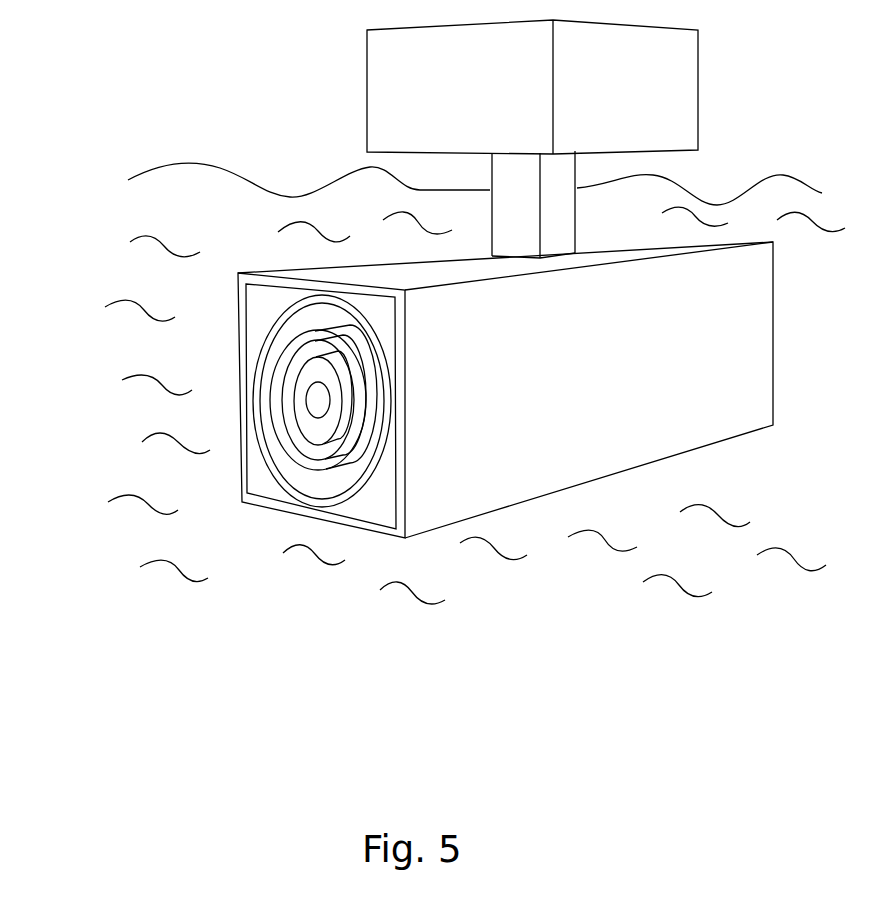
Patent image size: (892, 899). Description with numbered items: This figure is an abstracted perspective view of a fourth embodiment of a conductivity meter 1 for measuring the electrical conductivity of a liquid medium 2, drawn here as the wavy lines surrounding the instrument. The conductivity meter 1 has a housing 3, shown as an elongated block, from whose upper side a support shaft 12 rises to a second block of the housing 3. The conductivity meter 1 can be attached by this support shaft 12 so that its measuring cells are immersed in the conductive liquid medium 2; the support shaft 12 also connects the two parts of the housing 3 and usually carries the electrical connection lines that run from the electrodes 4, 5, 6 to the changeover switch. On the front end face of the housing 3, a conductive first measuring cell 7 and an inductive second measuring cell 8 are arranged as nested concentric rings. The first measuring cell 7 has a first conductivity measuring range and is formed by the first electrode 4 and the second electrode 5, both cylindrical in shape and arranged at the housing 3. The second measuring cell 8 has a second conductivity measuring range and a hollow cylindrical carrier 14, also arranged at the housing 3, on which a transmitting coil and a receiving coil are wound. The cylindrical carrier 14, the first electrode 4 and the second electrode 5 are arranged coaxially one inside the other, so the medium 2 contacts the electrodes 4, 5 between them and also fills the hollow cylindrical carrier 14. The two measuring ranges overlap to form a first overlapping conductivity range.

The conductivity meter 1 is at (735, 115).
The liquid medium 2 is at (246, 238).
The housing 3 is at (507, 483).
The first electrode 4 is at (297, 490).
The second electrode 5 is at (297, 452).
The electrode 6 is at (479, 135).
The first measuring cell 7 is at (276, 470).
The second measuring cell 8 is at (286, 419).
The support shaft 12 is at (560, 217).
The hollow cylindrical carrier 14 is at (300, 390).